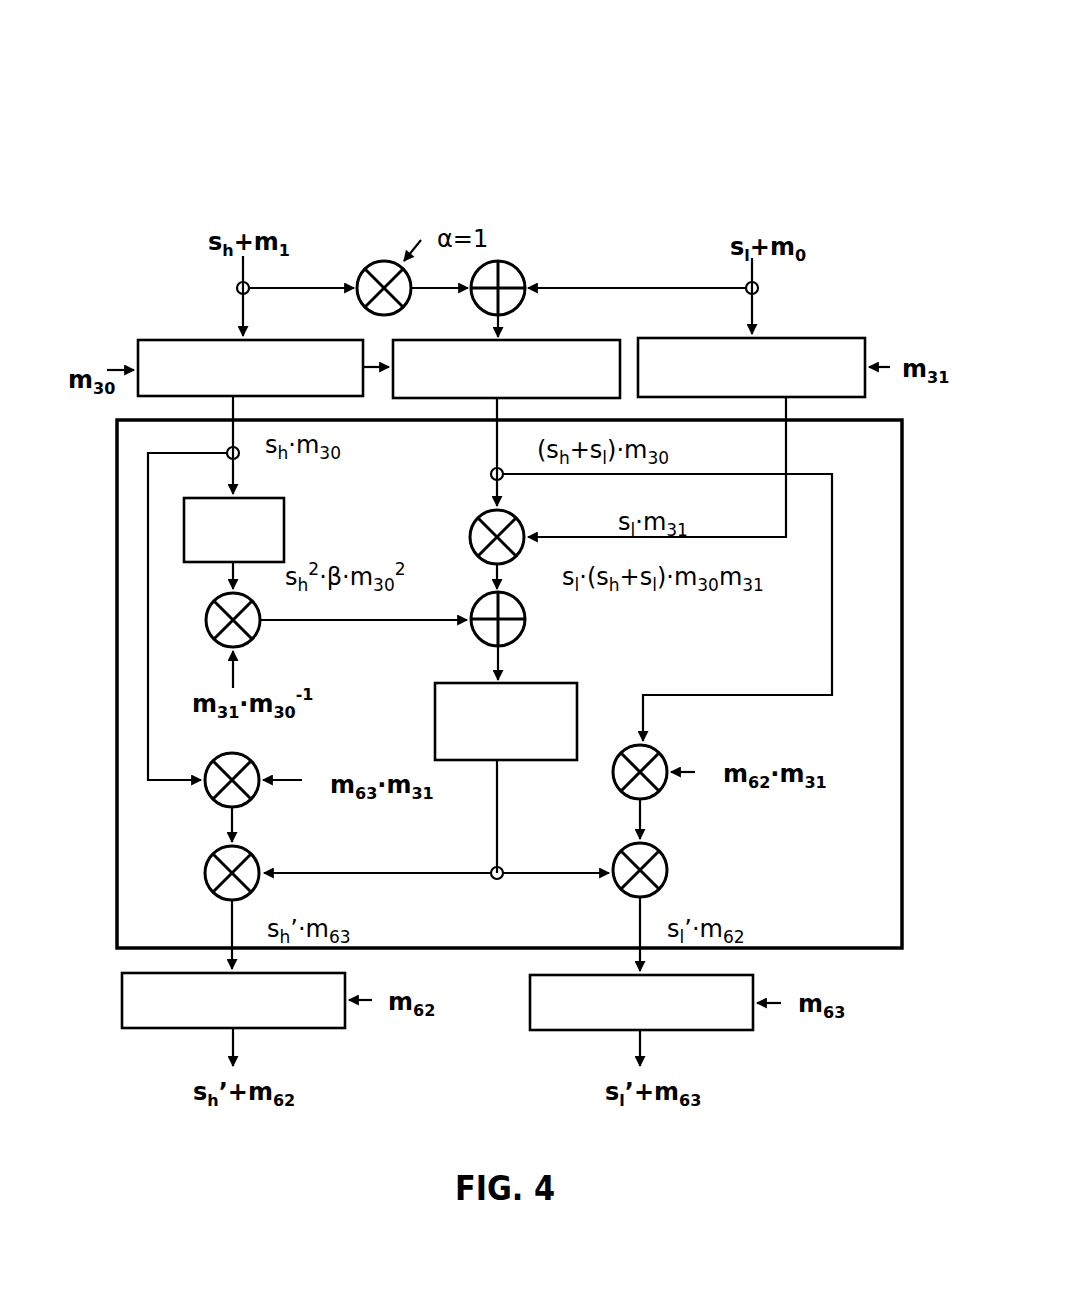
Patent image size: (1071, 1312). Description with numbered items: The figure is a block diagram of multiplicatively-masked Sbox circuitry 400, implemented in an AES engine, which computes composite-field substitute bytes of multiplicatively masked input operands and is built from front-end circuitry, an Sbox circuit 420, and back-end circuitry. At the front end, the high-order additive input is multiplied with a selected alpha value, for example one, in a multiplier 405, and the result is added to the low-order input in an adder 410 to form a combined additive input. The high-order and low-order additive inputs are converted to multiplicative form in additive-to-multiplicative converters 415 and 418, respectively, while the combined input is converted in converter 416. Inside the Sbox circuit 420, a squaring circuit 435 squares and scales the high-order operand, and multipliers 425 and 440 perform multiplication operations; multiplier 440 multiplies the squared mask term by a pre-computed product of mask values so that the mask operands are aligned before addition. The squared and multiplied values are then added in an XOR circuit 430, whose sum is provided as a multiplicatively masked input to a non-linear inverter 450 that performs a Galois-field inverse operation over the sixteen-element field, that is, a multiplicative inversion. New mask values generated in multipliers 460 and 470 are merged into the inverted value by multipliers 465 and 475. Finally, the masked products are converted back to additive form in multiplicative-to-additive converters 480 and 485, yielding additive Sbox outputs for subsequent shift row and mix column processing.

The circuitry 400 is at (168, 52).
The multiplier 405 is at (377, 262).
The adder (XOR) 410 is at (513, 263).
The additive-to-multiplicative converter 415 is at (170, 338).
The additive-to-multiplicative converter 416 is at (540, 340).
The additive-to-multiplicative converter 418 is at (763, 338).
The Sbox circuit 420 is at (117, 712).
The multiplier 425 is at (476, 516).
The XOR circuit 430 is at (520, 632).
The squaring circuit 435 is at (286, 528).
The multiplier 440 is at (262, 631).
The non-linear inverter 450 is at (577, 684).
The multiplier 460 is at (256, 764).
The multiplier 465 is at (258, 862).
The multiplier 470 is at (664, 758).
The multiplier 475 is at (663, 858).
The multiplicative-to-additive converter 480 is at (122, 1012).
The multiplicative-to-additive converter 485 is at (530, 1015).